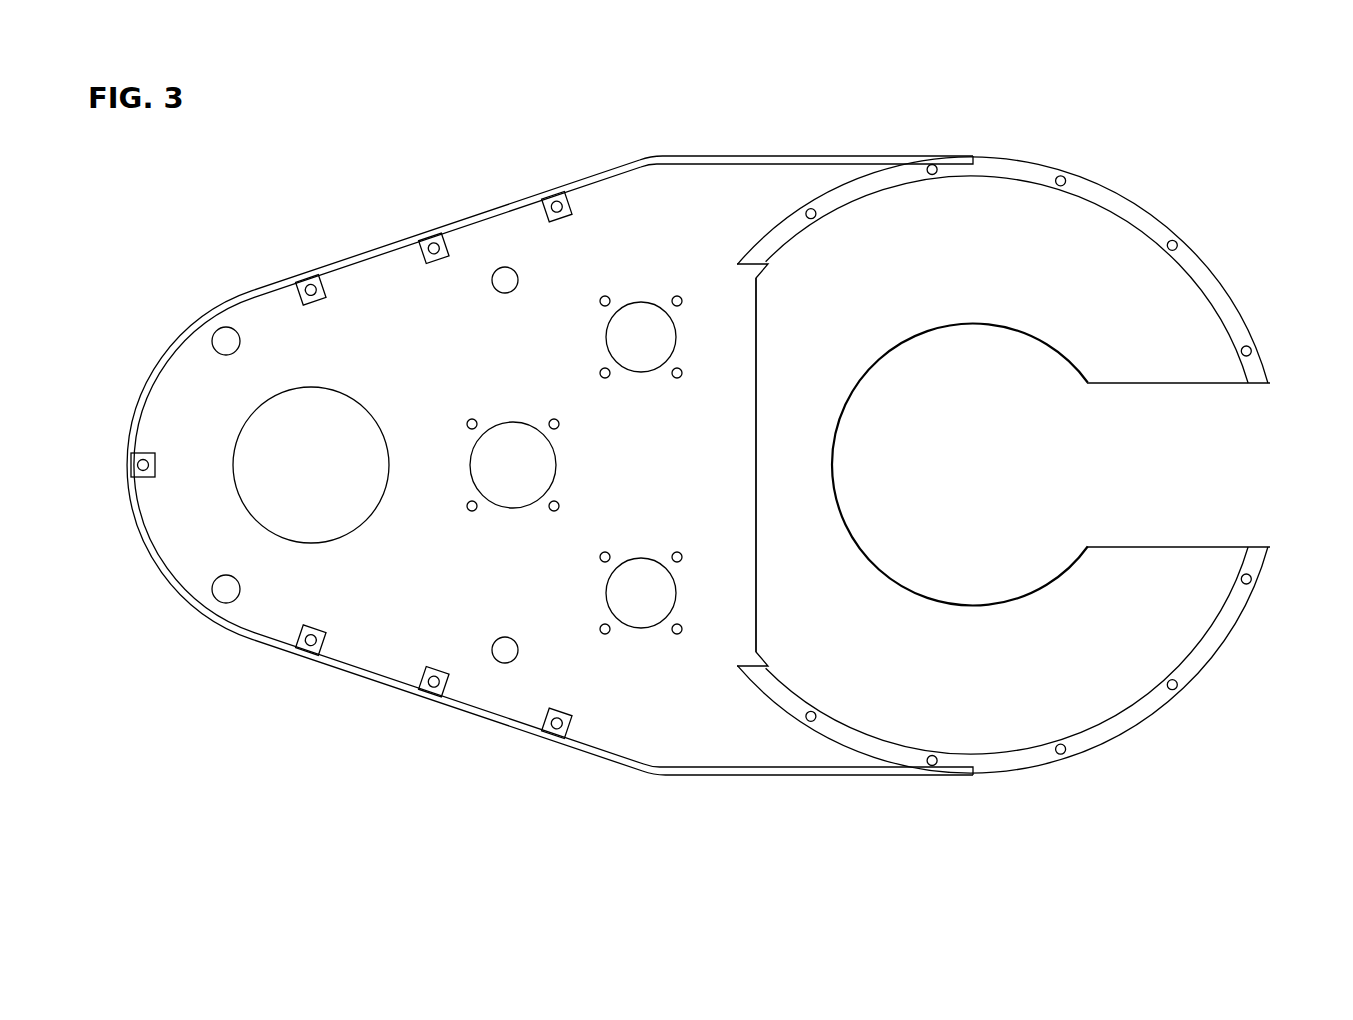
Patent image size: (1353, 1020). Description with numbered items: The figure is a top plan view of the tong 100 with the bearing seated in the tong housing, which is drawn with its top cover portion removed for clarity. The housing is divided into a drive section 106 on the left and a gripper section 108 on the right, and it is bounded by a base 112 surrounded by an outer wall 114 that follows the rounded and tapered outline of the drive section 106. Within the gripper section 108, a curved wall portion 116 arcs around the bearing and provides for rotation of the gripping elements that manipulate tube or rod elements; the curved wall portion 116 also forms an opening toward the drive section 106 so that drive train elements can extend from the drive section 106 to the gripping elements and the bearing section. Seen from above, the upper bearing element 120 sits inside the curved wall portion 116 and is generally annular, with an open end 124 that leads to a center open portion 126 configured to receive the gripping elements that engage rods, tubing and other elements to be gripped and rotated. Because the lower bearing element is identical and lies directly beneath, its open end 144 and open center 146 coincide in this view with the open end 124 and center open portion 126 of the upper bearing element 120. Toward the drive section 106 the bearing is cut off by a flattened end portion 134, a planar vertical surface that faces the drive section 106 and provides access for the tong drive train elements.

The tong 100 is at (720, 454).
The drive section 106 is at (358, 205).
The gripper section 108 is at (988, 463).
The base 112 is at (543, 366).
The outer wall 114 is at (628, 165).
The curved wall portion 116 is at (845, 192).
The upper bearing element 120 is at (933, 417).
The open end 124 is at (1200, 465).
The open end 144 is at (1183, 476).
The center open portion 126 is at (960, 464).
The open center 146 is at (960, 464).
The flattened end portion 134 is at (756, 393).